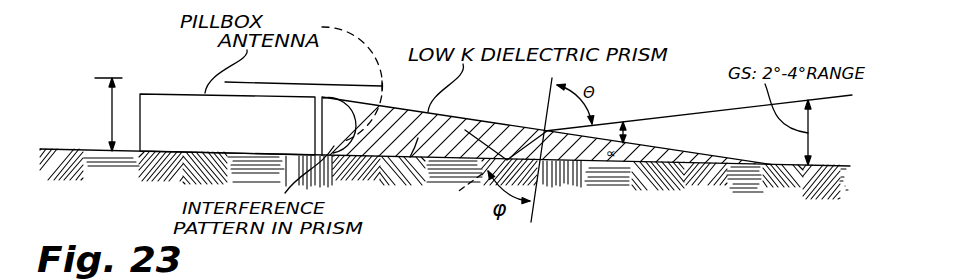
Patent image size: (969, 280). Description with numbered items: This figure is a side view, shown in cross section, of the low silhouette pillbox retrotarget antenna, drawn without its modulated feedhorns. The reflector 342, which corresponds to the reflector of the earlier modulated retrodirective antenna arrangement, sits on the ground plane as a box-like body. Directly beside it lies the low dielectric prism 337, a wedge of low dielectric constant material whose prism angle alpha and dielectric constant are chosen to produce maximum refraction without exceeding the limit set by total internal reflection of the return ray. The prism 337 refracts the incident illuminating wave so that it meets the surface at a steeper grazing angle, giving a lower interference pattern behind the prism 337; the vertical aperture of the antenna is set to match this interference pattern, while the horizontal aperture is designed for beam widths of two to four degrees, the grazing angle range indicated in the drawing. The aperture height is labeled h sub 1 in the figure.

The reflector 342 is at (174, 93).
The low dielectric prism 337 is at (417, 143).
The antenna aperture height h1 1 is at (251, 114).